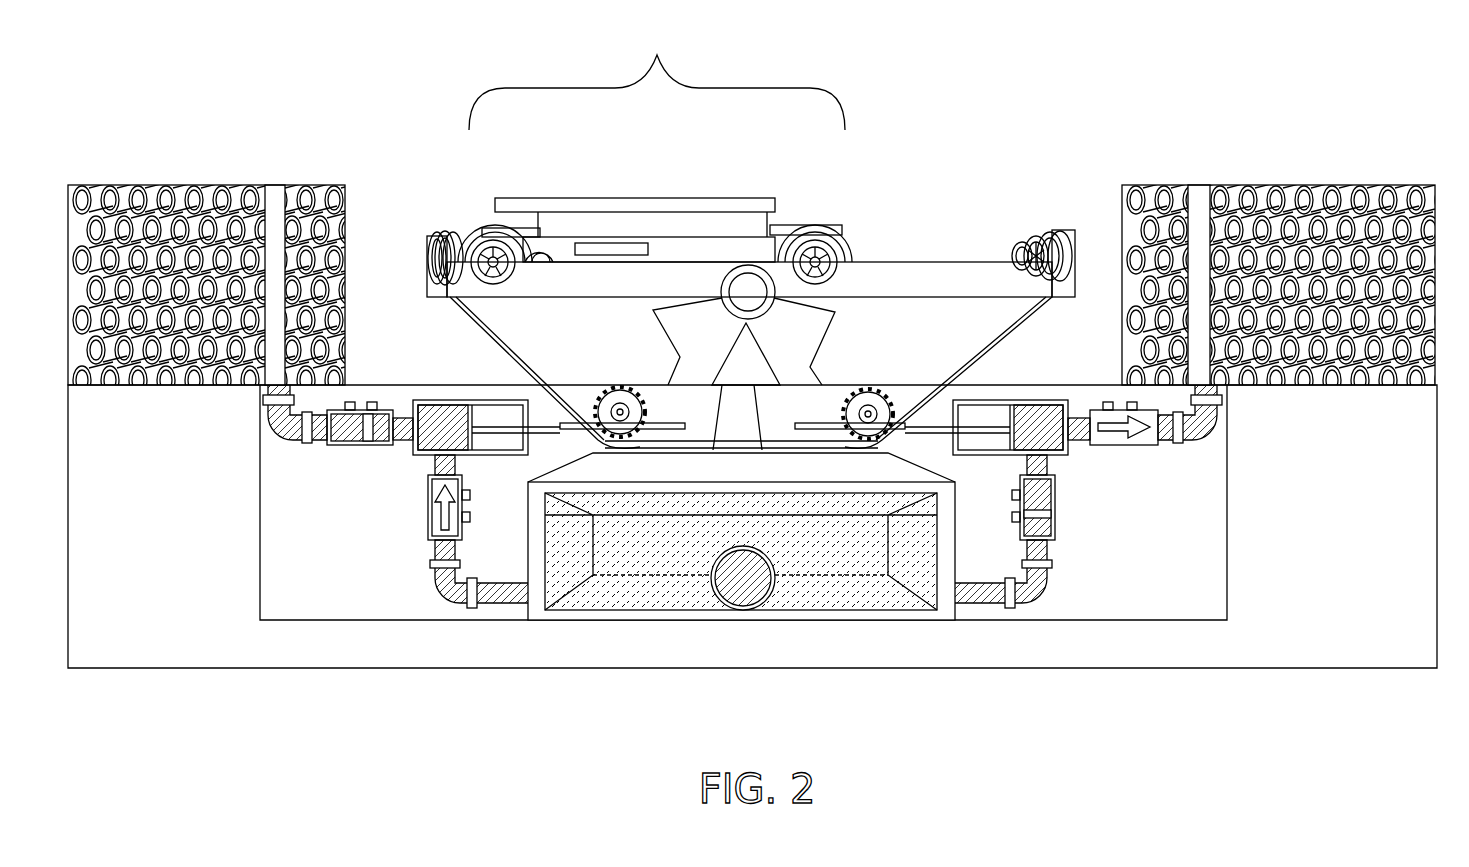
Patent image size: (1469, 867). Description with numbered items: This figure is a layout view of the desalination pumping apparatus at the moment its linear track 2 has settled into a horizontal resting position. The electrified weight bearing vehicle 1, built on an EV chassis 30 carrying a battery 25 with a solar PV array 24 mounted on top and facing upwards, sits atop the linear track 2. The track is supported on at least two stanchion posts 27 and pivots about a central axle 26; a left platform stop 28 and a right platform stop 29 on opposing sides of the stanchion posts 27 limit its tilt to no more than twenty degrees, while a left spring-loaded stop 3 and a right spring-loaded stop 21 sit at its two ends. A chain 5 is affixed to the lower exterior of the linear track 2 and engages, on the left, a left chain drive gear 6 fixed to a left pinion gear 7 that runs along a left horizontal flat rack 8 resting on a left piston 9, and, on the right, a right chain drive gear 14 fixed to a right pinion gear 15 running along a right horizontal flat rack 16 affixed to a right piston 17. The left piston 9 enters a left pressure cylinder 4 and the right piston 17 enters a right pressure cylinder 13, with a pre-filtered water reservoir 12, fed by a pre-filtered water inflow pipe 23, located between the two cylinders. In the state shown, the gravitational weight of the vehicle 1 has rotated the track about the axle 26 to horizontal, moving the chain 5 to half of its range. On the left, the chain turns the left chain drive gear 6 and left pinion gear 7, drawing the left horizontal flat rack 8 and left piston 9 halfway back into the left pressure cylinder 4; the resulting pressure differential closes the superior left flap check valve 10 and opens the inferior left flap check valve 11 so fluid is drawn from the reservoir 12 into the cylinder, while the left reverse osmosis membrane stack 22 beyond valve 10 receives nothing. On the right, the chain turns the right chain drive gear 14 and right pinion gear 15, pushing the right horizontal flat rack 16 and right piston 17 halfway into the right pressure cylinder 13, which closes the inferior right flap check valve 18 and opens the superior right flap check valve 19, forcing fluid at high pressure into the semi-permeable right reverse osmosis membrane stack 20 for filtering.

The electrified weight bearing vehicle (EWBV) 1 is at (657, 76).
The linear track 2 is at (950, 262).
The left spring-loaded stop 3 is at (447, 233).
The left pressure cylinder 4 is at (453, 398).
The chain 5 is at (462, 312).
The left chain drive gear 6 is at (596, 400).
The left pinion gear 7 is at (620, 405).
The left horizontal flat rack 8 is at (560, 420).
The left piston 9 is at (488, 437).
The superior left flap check valve 10 is at (355, 438).
The inferior left flap check valve 11 is at (425, 505).
The pre-filtered water reservoir 12 is at (833, 555).
The right pressure cylinder 13 is at (983, 458).
The right chain drive gear 14 is at (840, 400).
The right pinion gear 15 is at (868, 410).
The right horizontal flat rack 16 is at (813, 437).
The right piston 17 is at (934, 440).
The inferior right flap check valve 18 is at (1045, 515).
The superior right flap check valve 19 is at (1118, 448).
The right reverse osmosis membrane stack 20 is at (1268, 183).
The right spring-loaded stop 21 is at (1048, 232).
The left reverse osmosis membrane stack 22 is at (175, 183).
The pre-filtered water inflow pipe 23 is at (718, 605).
The solar PV array 24 is at (626, 198).
The battery 25 is at (736, 220).
The axle 26 is at (718, 290).
The stanchion posts 27 is at (712, 350).
The left platform stop 28 is at (700, 330).
The right platform stop 29 is at (806, 330).
The EV chassis 30 is at (800, 222).